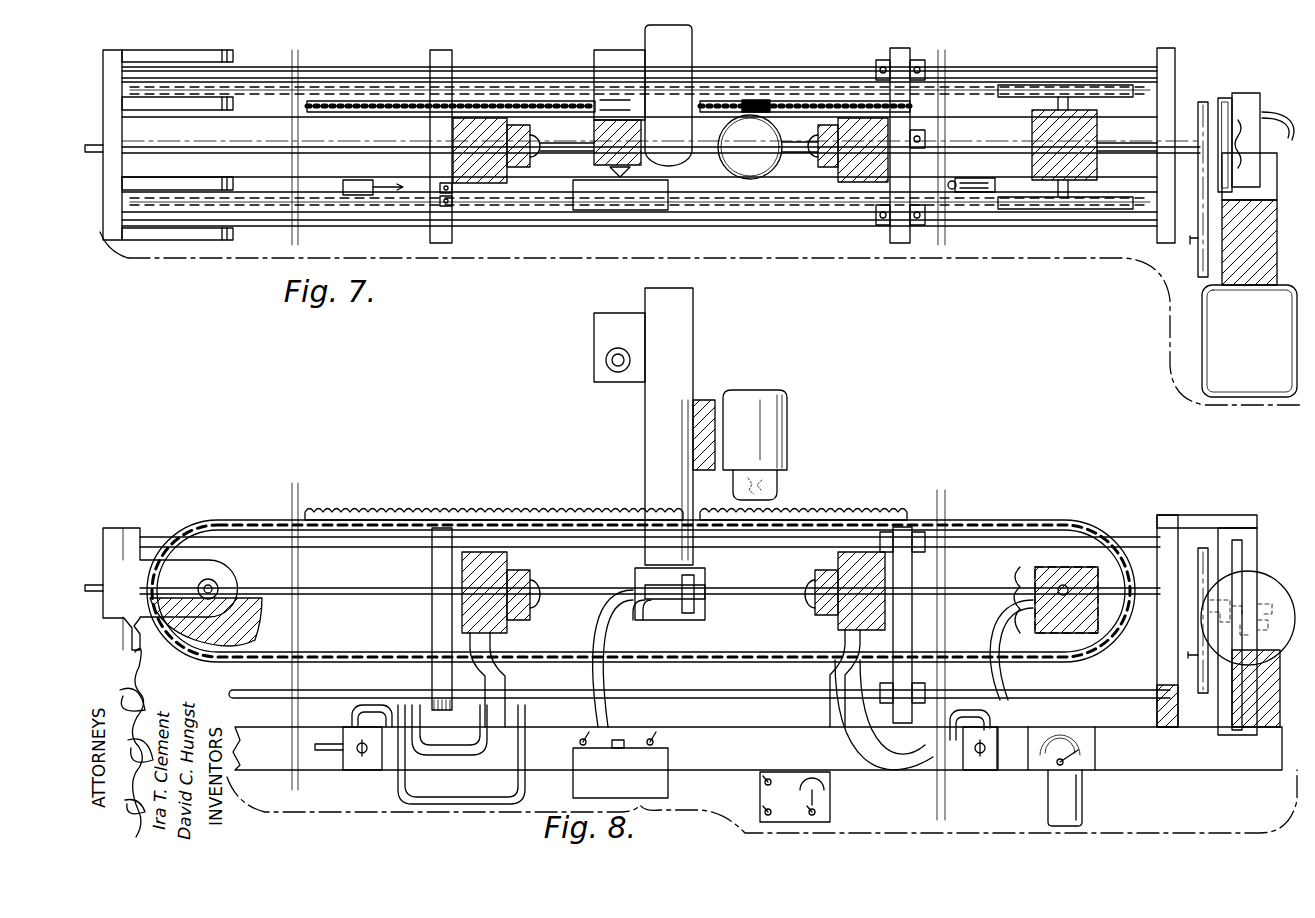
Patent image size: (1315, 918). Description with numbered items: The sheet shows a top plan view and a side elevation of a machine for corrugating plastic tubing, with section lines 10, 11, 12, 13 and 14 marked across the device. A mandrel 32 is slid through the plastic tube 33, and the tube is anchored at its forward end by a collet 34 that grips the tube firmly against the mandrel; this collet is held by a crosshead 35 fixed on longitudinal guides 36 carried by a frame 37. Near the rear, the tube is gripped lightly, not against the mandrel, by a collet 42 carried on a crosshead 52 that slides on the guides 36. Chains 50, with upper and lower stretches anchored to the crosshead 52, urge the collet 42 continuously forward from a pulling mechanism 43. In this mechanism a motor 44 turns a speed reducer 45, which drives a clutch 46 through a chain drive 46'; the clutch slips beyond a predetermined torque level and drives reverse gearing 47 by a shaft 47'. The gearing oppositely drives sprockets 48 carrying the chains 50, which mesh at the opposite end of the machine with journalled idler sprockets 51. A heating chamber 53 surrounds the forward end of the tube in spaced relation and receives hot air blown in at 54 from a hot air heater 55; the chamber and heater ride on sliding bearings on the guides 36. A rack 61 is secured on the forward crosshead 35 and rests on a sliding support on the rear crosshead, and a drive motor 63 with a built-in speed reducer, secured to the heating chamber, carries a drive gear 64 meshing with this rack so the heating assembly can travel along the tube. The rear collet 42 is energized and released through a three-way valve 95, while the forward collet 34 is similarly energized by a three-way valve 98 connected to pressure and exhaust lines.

In FIG. 7, the section line 10 is at (605, 242).
In FIG. 7, the section line 11 is at (797, 278).
In FIG. 7, the section line 12 is at (540, 278).
In FIG. 7, the section line 13 is at (1187, 280).
In FIG. 7, the section line 14 is at (280, 278).
In FIG. 7, the mandrel 32 is at (567, 134).
In FIG. 8, the mandrel 32 is at (780, 590).
In FIG. 7, the plastic tube 33 is at (447, 150).
In FIG. 8, the plastic tube 33 is at (570, 594).
In FIG. 7, the collet 34 is at (838, 140).
In FIG. 8, the collet 34 is at (825, 598).
In FIG. 7, the crosshead 35 is at (900, 55).
In FIG. 8, the crosshead 35 is at (905, 638).
In FIG. 7, the longitudinal guides 36 is at (1015, 65).
In FIG. 8, the longitudinal guides 36 is at (390, 545).
In FIG. 7, the frame 37 is at (1160, 240).
In FIG. 8, the frame 37 is at (1160, 727).
In FIG. 7, the collet 42 is at (540, 155).
In FIG. 8, the collet 42 is at (540, 582).
In FIG. 7, the pulling mechanism 43 is at (1262, 110).
In FIG. 7, the motor 44 is at (1248, 352).
In FIG. 8, the motor 44 is at (1270, 580).
In FIG. 7, the speed reducer 45 is at (1249, 219).
In FIG. 8, the speed reducer 45 is at (1245, 727).
In FIG. 7, the clutch 46 is at (1242, 153).
In FIG. 8, the clutch 46 is at (1237, 610).
In FIG. 7, the chain drive 46' is at (1211, 169).
In FIG. 8, the chain drive 46' is at (1180, 586).
In FIG. 7, the reverse gearing 47 is at (1064, 145).
In FIG. 8, the reverse gearing 47 is at (1042, 624).
In FIG. 7, the shaft 47' is at (1127, 121).
In FIG. 8, the shaft 47' is at (1129, 649).
In FIG. 7, the sprockets 48 is at (1100, 85).
In FIG. 8, the sprockets 48 is at (1000, 578).
In FIG. 7, the chains 50 is at (972, 88).
In FIG. 8, the chains 50 is at (805, 660).
In FIG. 7, the idler sprockets 51 is at (222, 190).
In FIG. 8, the idler sprockets 51 is at (255, 617).
In FIG. 7, the crosshead 52 is at (441, 243).
In FIG. 8, the crosshead 52 is at (440, 622).
In FIG. 8, the heating chamber 53 is at (640, 622).
In FIG. 8, the hot air inlet 54 is at (640, 566).
In FIG. 7, the hot air heater 55 is at (652, 140).
In FIG. 8, the hot air heater 55 is at (676, 338).
In FIG. 7, the rack 61 is at (405, 100).
In FIG. 8, the rack 61 is at (862, 510).
In FIG. 7, the drive motor 63 is at (736, 157).
In FIG. 8, the drive motor 63 is at (770, 424).
In FIG. 7, the drive gear 64 is at (756, 100).
In FIG. 8, the drive gear 64 is at (780, 498).
In FIG. 7, the three-way valve 95 is at (365, 178).
In FIG. 8, the three-way valve 95 is at (362, 770).
In FIG. 7, the three-way valve 98 is at (980, 176).
In FIG. 8, the three-way valve 98 is at (980, 770).